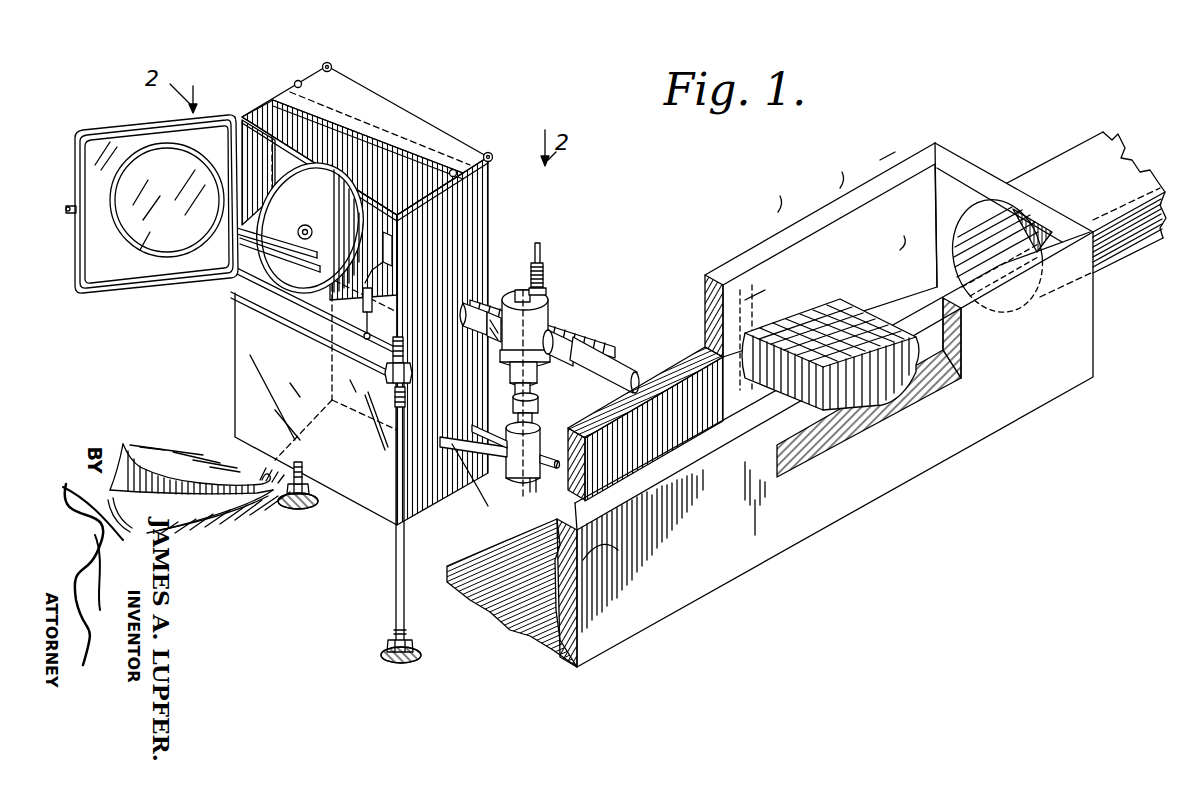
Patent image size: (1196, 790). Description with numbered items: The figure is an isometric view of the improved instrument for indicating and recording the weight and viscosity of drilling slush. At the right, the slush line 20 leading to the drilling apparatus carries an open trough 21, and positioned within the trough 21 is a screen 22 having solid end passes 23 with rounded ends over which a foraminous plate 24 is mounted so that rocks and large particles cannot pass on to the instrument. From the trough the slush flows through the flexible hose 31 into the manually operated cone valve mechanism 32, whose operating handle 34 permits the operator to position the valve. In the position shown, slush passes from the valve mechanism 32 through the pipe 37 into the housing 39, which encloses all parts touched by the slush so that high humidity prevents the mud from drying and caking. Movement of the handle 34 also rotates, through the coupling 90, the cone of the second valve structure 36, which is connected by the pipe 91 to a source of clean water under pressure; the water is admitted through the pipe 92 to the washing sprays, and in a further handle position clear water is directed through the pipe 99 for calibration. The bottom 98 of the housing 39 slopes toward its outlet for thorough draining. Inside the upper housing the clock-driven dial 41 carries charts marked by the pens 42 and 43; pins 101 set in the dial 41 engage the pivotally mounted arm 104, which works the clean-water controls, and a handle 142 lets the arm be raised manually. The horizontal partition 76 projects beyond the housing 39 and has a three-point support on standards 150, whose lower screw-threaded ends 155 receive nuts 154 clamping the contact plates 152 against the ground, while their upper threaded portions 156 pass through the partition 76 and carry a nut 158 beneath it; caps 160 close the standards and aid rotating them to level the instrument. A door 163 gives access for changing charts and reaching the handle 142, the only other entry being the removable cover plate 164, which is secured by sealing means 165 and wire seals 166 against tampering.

The slush line 20 is at (1045, 168).
The open trough 21 is at (860, 222).
The screen 22 is at (887, 370).
The solid end passes 23 is at (866, 415).
The plate 24 is at (962, 333).
The hose 31 is at (605, 378).
The valve mechanism 32 is at (532, 313).
The operating handle 34 is at (570, 327).
The valve structure 36 is at (547, 455).
The pipe 37 is at (504, 290).
The housing 39 is at (374, 350).
The dial 41 is at (303, 178).
The pen 42 is at (292, 260).
The pen 43 is at (304, 226).
The horizontal partition 76 is at (240, 283).
The coupling 90 is at (540, 404).
The pipe 91 is at (524, 494).
The pipe 92 is at (478, 492).
The bottom 98 is at (441, 520).
The pipe 99 is at (483, 430).
The pins 101 is at (371, 335).
The pivotally mounted arm 104 is at (388, 262).
The handle 142 is at (360, 295).
The standards 150 is at (398, 553).
The contact plates 152 is at (424, 656).
The nuts 154 is at (414, 642).
The lower screw-threaded ends 155 is at (283, 497).
The screw-threaded portions 156 is at (548, 283).
The nut 158 is at (543, 500).
The caps 160 is at (543, 252).
The door 163 is at (168, 283).
The removable cover plate 164 is at (352, 93).
The sealing means 165 is at (332, 68).
The wire seals 166 is at (298, 80).